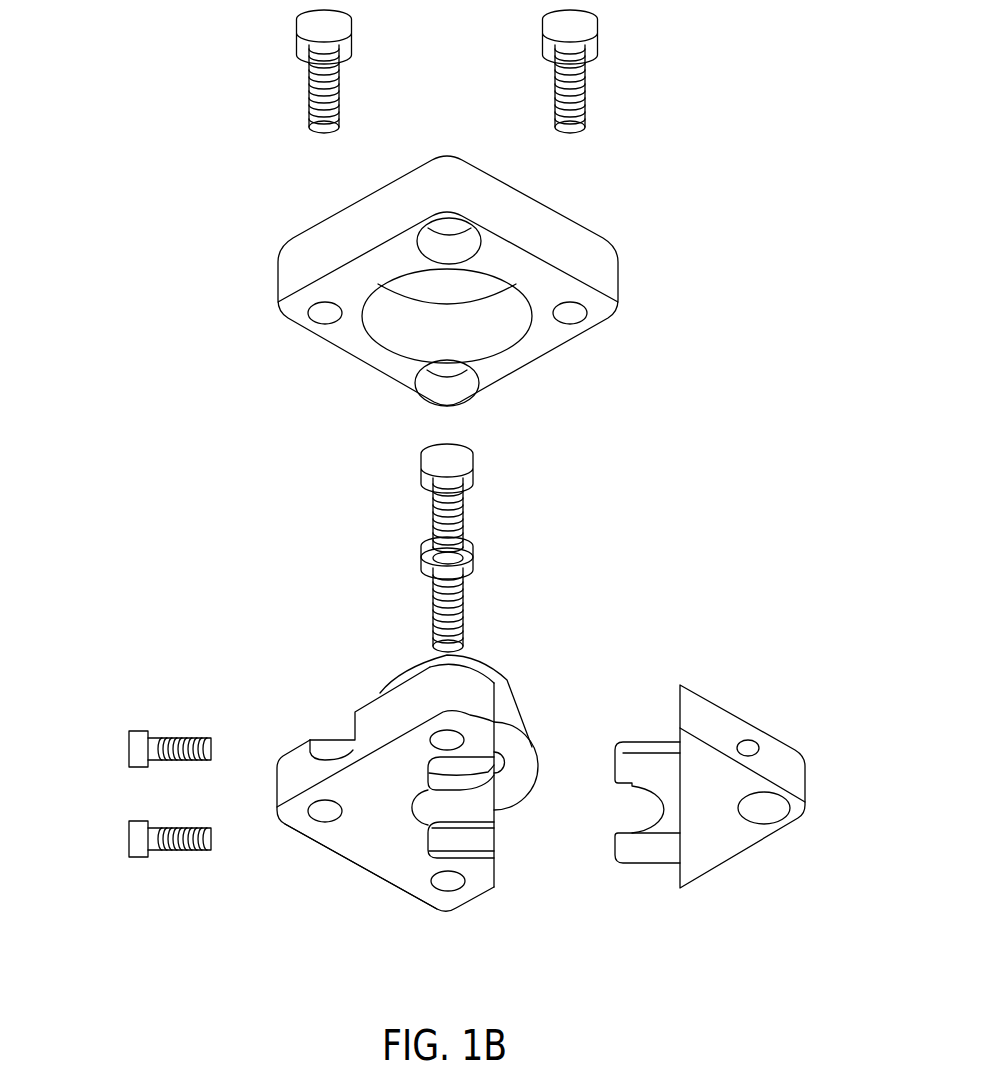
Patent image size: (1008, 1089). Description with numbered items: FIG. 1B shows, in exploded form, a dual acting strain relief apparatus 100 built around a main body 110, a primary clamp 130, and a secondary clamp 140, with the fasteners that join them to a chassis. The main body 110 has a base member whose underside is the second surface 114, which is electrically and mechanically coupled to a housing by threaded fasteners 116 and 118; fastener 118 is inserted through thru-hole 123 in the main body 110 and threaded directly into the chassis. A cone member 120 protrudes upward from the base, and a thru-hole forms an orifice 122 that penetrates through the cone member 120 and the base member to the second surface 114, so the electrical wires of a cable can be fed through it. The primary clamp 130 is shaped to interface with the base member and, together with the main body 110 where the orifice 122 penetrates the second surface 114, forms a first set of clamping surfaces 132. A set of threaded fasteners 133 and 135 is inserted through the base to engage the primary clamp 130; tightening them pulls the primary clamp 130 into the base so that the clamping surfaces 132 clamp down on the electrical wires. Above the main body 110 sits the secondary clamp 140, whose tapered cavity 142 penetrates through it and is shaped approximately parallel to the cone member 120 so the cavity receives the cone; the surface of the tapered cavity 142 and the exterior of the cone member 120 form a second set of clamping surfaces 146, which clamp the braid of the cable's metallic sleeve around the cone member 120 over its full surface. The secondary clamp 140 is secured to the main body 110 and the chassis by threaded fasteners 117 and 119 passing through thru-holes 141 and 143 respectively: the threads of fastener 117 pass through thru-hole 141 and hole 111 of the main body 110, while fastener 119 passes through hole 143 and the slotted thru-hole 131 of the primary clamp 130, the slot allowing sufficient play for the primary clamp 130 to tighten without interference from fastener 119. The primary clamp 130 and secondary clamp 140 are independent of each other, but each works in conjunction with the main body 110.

The dual acting strain relief apparatus 100 is at (758, 188).
The main body 110 is at (425, 800).
The hole 111 is at (325, 814).
The second surface 114 is at (382, 858).
The threaded fastener 116 is at (476, 563).
The threaded fastener 117 is at (352, 38).
The threaded fastener 118 is at (476, 465).
The threaded fastener 119 is at (597, 38).
The cone member 120 is at (507, 696).
The orifice 122 is at (496, 771).
The thru-hole 123 is at (448, 882).
The primary clamp 130 is at (726, 809).
The slotted thru-hole 131 is at (772, 812).
The first set of clamping surfaces 132 is at (443, 805).
The threaded fastener 133 is at (128, 748).
The threaded fastener 135 is at (128, 838).
The secondary clamp 140 is at (452, 309).
The thru-hole 141 is at (323, 316).
The tapered cavity 142 is at (408, 345).
The thru-hole 143 is at (572, 316).
The second set of clamping surfaces 146 is at (372, 437).